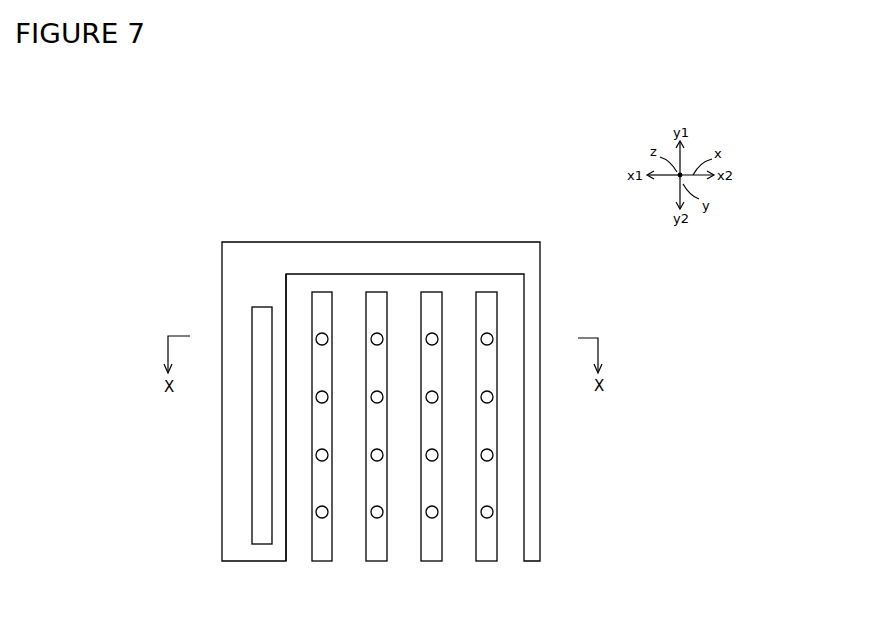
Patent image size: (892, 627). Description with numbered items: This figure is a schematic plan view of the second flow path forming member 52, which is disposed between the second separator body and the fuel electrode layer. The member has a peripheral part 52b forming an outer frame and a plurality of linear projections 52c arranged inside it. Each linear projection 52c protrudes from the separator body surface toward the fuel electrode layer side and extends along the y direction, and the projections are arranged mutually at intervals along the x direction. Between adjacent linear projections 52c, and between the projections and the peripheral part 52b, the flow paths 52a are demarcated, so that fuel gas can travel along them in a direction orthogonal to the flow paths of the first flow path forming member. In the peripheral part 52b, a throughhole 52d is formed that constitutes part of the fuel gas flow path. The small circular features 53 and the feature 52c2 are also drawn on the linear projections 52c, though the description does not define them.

The second flow path forming member 52 is at (547, 213).
The flow paths 52a is at (286, 543).
The peripheral part 52b is at (540, 468).
The linear projections 52c is at (502, 549).
The hole in support bar 52c2 is at (487, 336).
The throughhole 52d is at (253, 518).
The holes 53 is at (493, 512).